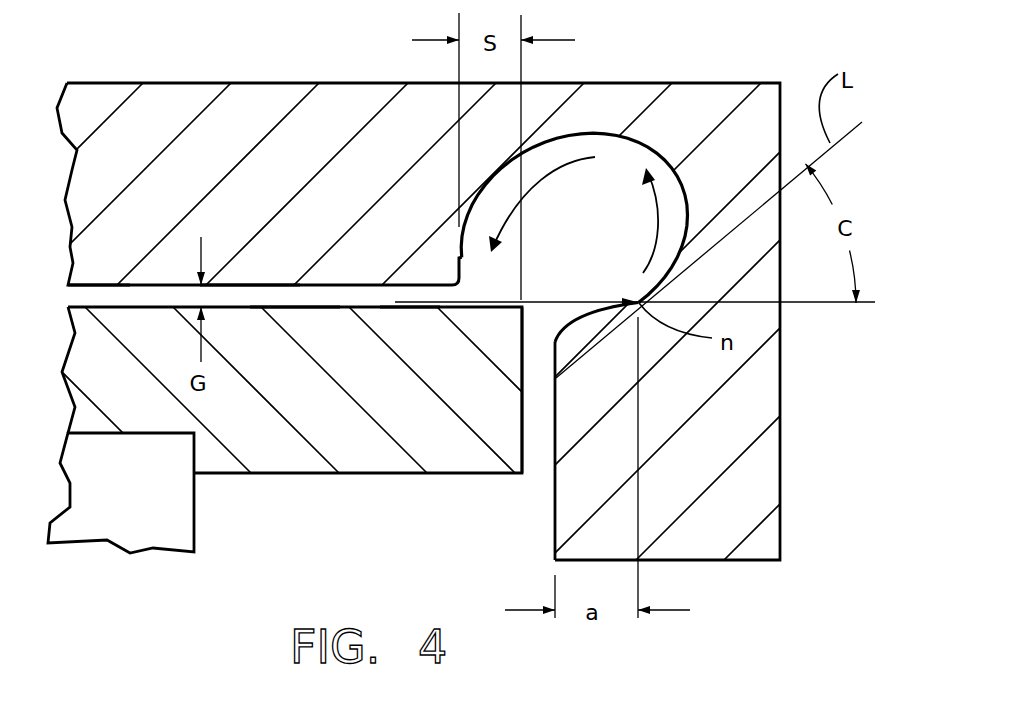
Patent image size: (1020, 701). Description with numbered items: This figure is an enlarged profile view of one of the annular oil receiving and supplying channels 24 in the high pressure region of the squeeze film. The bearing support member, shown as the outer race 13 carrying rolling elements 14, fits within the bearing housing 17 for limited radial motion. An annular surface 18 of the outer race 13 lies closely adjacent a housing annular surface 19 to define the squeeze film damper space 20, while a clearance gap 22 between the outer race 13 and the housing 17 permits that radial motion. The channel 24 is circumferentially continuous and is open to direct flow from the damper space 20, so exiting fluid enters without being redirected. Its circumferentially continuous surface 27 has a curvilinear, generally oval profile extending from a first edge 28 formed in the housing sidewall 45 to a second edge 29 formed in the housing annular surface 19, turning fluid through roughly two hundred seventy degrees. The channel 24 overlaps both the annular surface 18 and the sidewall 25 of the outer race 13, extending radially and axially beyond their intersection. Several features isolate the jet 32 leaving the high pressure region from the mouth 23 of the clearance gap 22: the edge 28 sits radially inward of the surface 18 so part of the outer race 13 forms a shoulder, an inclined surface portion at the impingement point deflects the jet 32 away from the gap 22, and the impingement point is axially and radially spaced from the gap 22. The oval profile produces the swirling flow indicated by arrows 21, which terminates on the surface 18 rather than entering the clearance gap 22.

The outer race 13 is at (300, 458).
The rolling elements 14 is at (145, 499).
The bearing housing 17 is at (706, 85).
The annular surface 18 is at (80, 285).
The housing annular surface 19 is at (335, 295).
The squeeze film damper space 20 is at (245, 300).
The swirling arrows 21 is at (656, 228).
The clearance gap 22 is at (538, 458).
The mouth of clearance gap 23 is at (538, 345).
The annular channel 24 is at (562, 272).
The sidewall 25 is at (522, 413).
The circumferentially continuous surface 27 is at (640, 115).
The first circumferentially continuous edge 28 is at (556, 347).
The second circumferentially continuous edge 29 is at (460, 288).
The jet 32 is at (432, 303).
The housing sidewall 45 is at (556, 412).